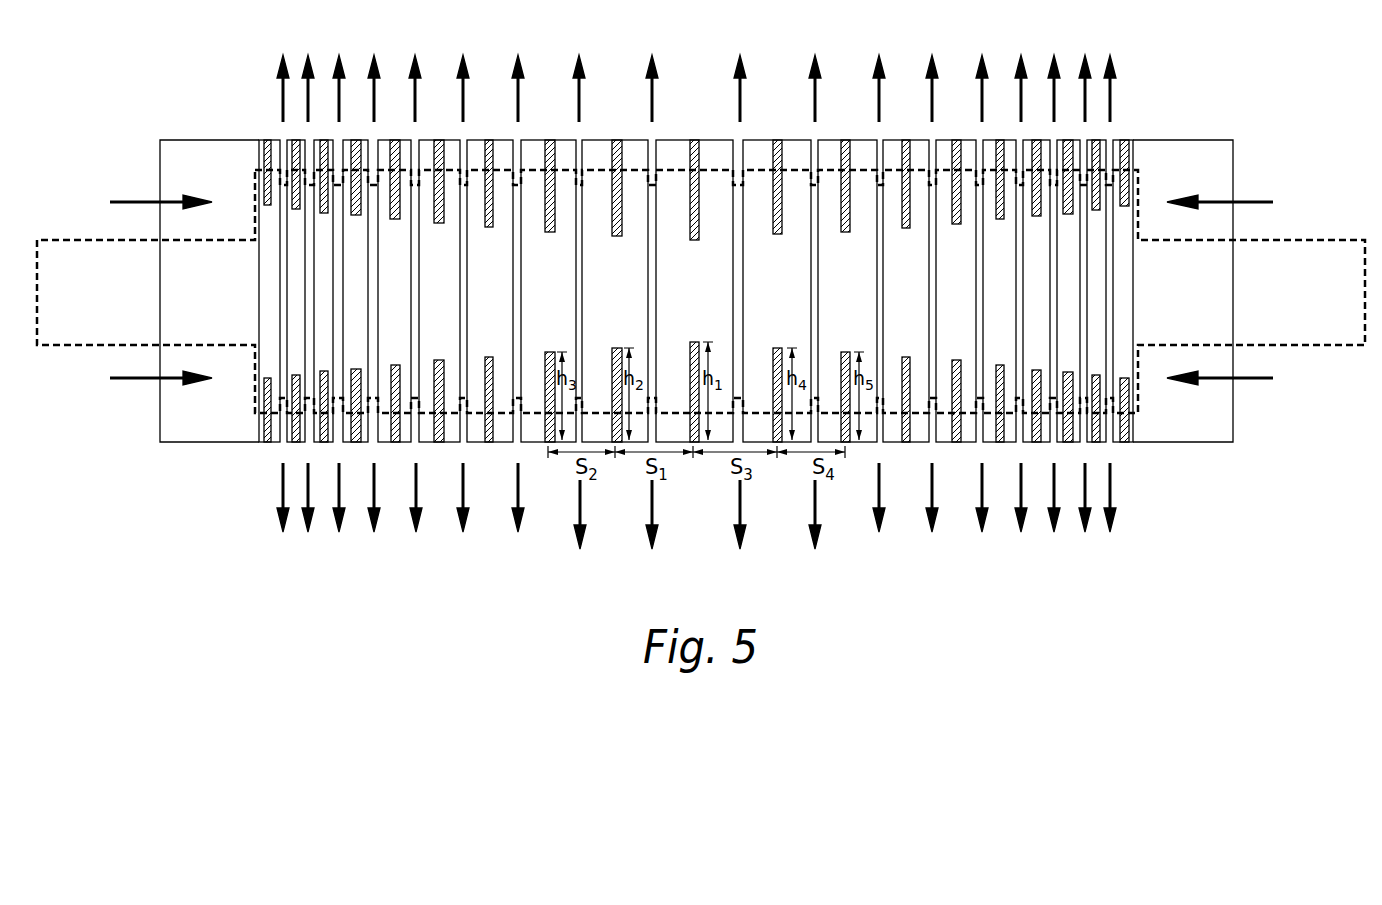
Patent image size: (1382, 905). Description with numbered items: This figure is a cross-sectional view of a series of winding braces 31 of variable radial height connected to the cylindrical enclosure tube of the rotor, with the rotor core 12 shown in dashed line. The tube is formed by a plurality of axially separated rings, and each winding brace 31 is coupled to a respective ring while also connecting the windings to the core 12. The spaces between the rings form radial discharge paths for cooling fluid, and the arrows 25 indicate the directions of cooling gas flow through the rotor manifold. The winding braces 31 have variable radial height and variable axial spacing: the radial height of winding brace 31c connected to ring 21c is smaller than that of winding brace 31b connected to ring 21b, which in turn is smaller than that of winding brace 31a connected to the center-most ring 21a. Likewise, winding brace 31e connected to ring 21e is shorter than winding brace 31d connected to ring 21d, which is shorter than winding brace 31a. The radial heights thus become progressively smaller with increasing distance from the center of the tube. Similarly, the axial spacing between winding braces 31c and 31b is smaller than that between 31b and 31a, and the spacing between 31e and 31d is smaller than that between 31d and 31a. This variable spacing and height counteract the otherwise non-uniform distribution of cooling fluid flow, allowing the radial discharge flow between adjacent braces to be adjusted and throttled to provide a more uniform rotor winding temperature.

The core 12 is at (92, 323).
The arrows 25 is at (147, 200).
The center-most ring 21a is at (675, 148).
The ring 21b is at (597, 148).
The ring 21c is at (530, 148).
The ring 21d is at (755, 148).
The ring 21e is at (828, 148).
The winding braces 31 is at (297, 432).
The winding brace 31a is at (690, 360).
The winding brace 31b is at (614, 357).
The winding brace 31c is at (548, 358).
The winding brace 31d is at (774, 360).
The winding brace 31e is at (844, 360).